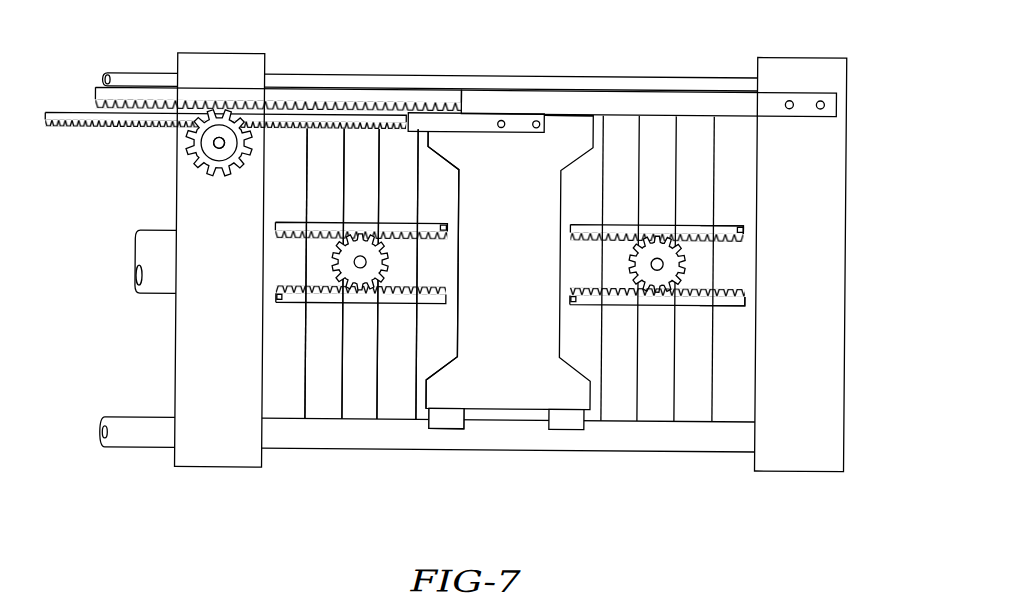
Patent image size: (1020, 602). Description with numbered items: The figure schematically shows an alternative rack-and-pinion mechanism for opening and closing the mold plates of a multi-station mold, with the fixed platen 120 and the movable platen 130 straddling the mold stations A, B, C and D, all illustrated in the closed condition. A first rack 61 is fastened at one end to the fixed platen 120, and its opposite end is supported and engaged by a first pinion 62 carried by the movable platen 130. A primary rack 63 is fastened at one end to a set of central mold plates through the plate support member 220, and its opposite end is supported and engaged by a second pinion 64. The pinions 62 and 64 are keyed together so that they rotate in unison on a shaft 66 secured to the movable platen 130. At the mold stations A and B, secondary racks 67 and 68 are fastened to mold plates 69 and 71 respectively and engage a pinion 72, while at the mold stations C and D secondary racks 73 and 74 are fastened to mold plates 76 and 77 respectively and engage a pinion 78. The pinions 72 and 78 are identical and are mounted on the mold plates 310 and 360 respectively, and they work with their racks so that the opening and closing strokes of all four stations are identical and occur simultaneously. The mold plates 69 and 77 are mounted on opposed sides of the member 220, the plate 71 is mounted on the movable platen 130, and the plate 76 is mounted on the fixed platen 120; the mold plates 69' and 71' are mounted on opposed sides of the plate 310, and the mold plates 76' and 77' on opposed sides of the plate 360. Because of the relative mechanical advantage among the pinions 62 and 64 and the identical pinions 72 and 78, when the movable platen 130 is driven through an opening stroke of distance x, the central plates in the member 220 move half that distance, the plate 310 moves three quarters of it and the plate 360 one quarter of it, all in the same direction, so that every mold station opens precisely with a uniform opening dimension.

The rack 61 is at (478, 98).
The pinion 62 is at (192, 158).
The primary rack 63 is at (82, 124).
The pinion 64 is at (221, 160).
The shaft 66 is at (218, 138).
The secondary rack 67 is at (357, 228).
The secondary rack 68 is at (357, 302).
The mold plate 69 is at (458, 196).
The mold plate 69' is at (448, 335).
The mold plate 71 is at (342, 273).
The mold plate 71' is at (255, 273).
The pinion 72 is at (336, 265).
The secondary rack 73 is at (655, 229).
The secondary rack 74 is at (743, 300).
The mold plate 76 is at (747, 191).
The mold plate 76' is at (649, 80).
The mold plate 77 is at (509, 261).
The mold plate 77' is at (522, 449).
The pinion 78 is at (655, 300).
The fixed platen 120 is at (823, 338).
The movable platen 130 is at (183, 325).
The plate support member 220 is at (448, 395).
The mold plate 310 is at (355, 404).
The mold plate 360 is at (657, 394).
The mold station A is at (305, 186).
The mold station B is at (417, 183).
The mold station C is at (603, 193).
The mold station D is at (712, 182).